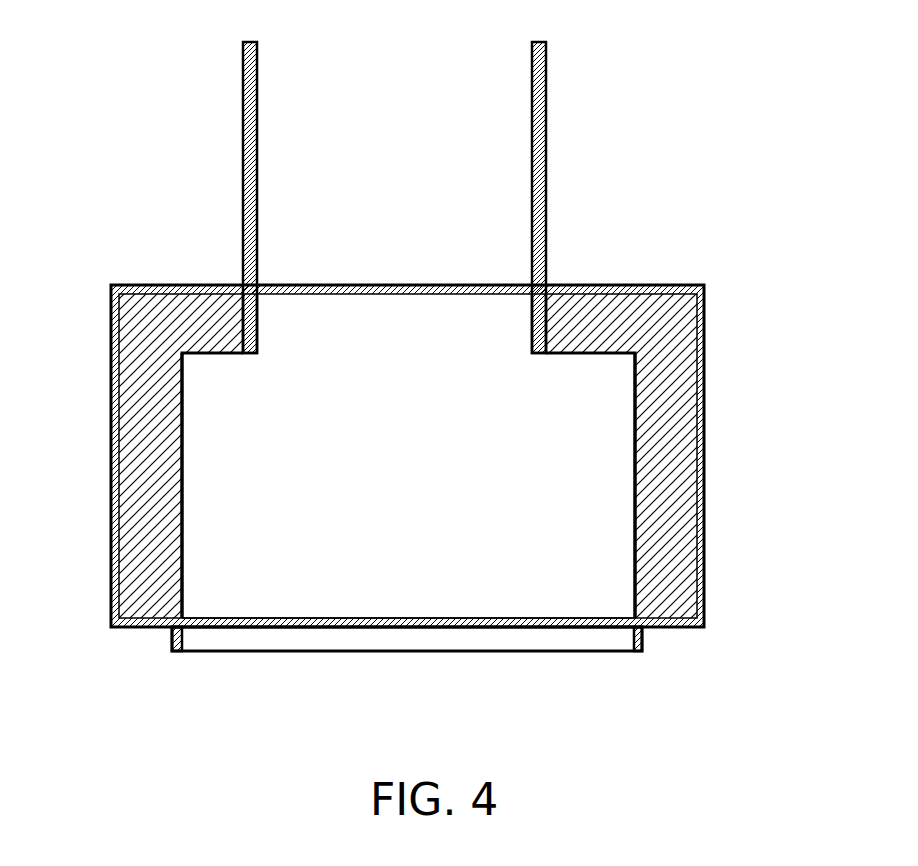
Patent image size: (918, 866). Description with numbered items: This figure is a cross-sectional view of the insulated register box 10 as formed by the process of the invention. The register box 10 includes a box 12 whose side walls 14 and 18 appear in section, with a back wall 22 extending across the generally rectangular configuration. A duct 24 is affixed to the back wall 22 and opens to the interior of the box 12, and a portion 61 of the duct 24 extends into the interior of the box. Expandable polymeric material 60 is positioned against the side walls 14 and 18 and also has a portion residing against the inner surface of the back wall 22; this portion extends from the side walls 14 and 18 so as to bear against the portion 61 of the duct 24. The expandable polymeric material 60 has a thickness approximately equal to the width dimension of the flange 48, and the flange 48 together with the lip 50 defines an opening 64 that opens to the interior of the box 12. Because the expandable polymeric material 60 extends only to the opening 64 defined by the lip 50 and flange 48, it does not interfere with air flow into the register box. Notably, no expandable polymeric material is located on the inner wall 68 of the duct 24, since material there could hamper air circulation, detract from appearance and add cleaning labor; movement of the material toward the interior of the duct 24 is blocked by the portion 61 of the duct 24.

The insulated register box 10 is at (657, 114).
The box 12 is at (706, 376).
The side wall 14 is at (706, 480).
The side wall 18 is at (110, 459).
The back wall 22 is at (608, 285).
The duct 24 is at (359, 197).
The flange 48 is at (678, 629).
The lip 50 is at (183, 636).
The expandable polymeric material 60 is at (235, 342).
The portion of the duct 61 is at (258, 322).
The opening 64 is at (433, 665).
The inner wall of the duct 68 is at (257, 114).